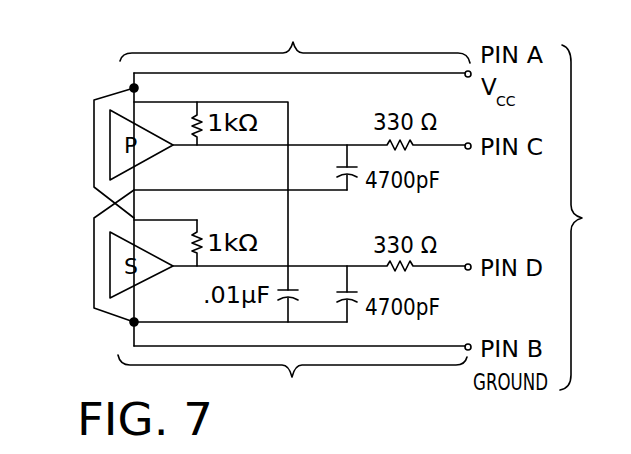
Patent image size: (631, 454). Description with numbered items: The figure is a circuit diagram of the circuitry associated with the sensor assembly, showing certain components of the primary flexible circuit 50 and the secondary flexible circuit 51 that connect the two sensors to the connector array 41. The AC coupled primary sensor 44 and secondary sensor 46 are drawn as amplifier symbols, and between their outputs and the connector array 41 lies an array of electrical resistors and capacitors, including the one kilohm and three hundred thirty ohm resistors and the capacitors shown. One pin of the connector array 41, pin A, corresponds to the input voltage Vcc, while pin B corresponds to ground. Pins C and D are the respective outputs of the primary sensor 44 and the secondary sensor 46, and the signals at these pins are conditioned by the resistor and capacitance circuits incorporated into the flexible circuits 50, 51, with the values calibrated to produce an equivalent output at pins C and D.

The connector array 41 is at (586, 217).
The primary sensor 44 is at (118, 134).
The secondary sensor 46 is at (118, 248).
The primary flexible circuit 50 is at (295, 40).
The secondary flexible circuit 51 is at (292, 380).